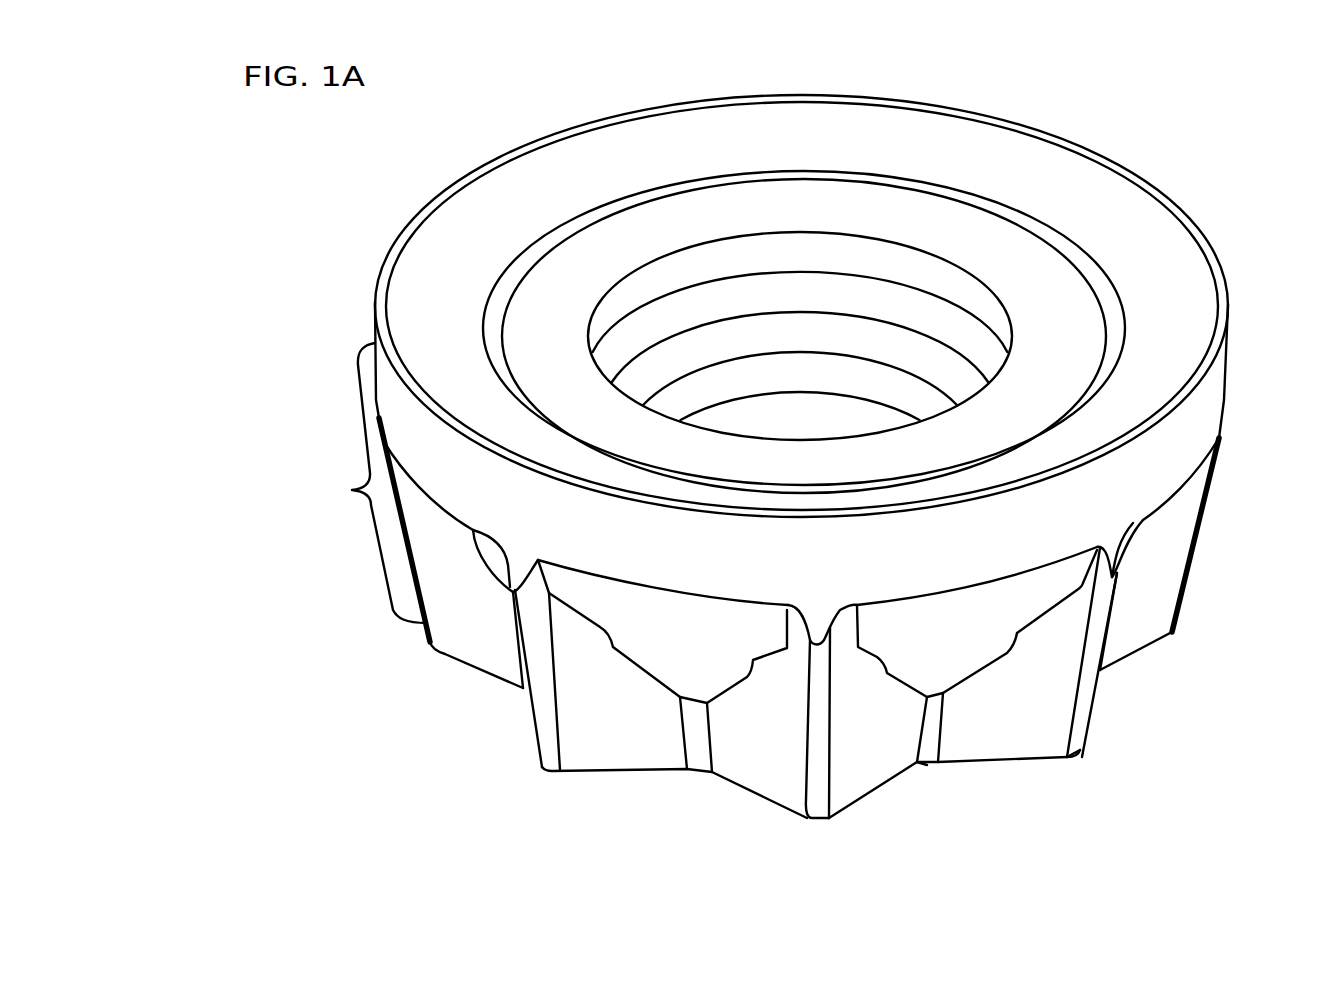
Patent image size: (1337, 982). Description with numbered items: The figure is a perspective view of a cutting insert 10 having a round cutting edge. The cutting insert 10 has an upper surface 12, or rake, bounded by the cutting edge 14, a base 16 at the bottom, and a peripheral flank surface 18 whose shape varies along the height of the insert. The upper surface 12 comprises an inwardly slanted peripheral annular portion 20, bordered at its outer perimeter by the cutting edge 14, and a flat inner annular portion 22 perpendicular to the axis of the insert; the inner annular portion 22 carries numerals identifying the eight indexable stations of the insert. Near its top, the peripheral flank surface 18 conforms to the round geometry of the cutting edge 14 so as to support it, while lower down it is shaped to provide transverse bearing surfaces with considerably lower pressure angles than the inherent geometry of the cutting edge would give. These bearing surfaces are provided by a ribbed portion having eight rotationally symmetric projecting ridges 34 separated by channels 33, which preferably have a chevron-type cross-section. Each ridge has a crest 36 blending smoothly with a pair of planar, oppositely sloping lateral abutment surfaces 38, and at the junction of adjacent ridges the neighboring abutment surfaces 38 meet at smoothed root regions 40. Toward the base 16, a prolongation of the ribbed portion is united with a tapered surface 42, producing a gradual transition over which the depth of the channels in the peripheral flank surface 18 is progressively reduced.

The cutting insert 10 is at (1060, 100).
The upper surface 12 is at (798, 140).
The cutting edge 14 is at (583, 123).
The base 16 is at (629, 778).
The peripheral flank surface 18 is at (328, 498).
The peripheral annular portion 20 is at (1150, 208).
The inner annular portion 22 is at (1060, 303).
The channels 33 is at (925, 780).
The ridges 34 is at (1078, 765).
The crest 36 is at (811, 800).
The lateral abutment surfaces 38 is at (753, 743).
The root regions 40 is at (930, 722).
The tapered surface 42 is at (960, 630).